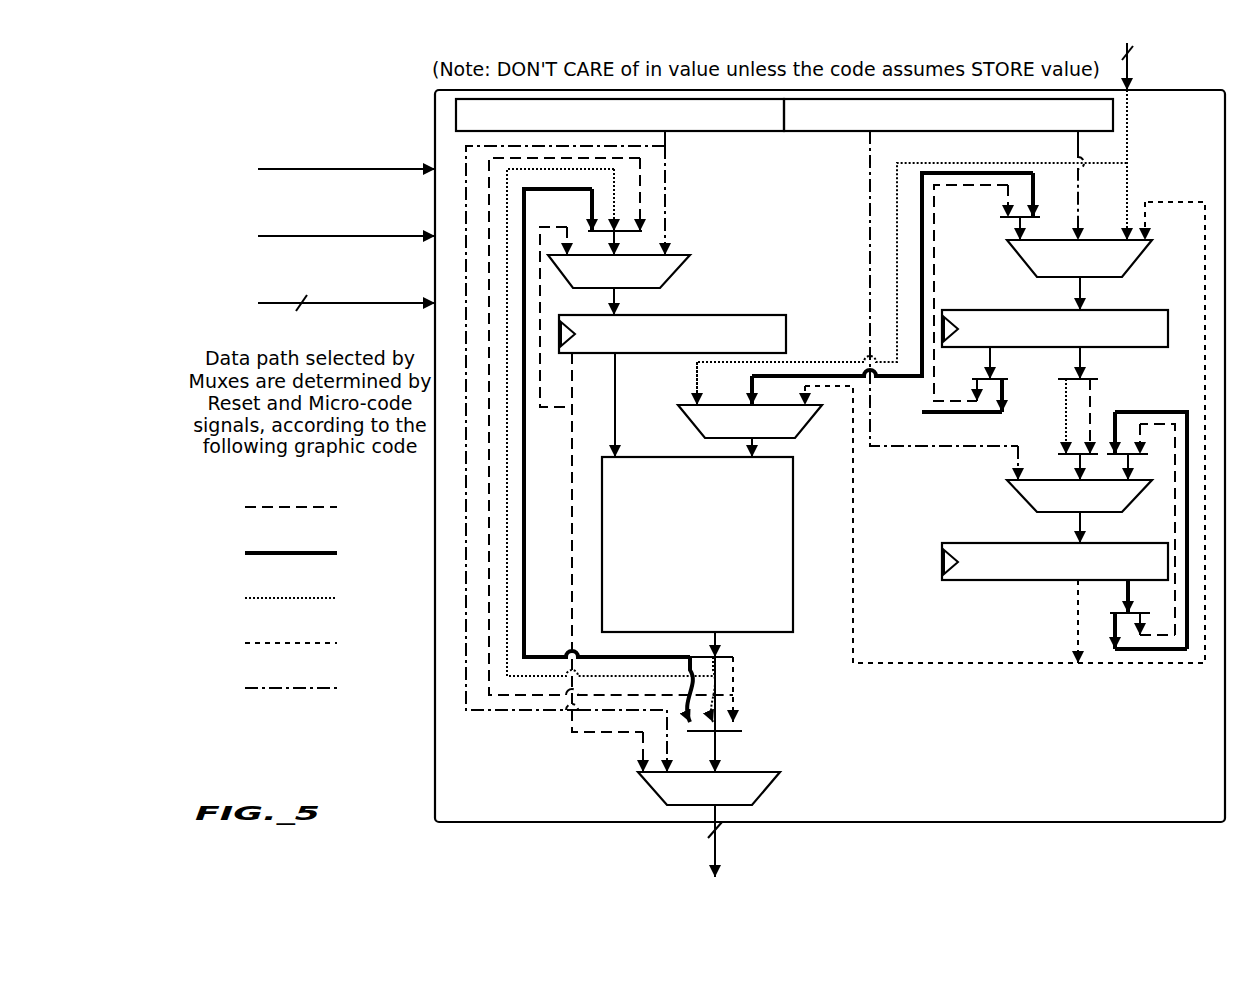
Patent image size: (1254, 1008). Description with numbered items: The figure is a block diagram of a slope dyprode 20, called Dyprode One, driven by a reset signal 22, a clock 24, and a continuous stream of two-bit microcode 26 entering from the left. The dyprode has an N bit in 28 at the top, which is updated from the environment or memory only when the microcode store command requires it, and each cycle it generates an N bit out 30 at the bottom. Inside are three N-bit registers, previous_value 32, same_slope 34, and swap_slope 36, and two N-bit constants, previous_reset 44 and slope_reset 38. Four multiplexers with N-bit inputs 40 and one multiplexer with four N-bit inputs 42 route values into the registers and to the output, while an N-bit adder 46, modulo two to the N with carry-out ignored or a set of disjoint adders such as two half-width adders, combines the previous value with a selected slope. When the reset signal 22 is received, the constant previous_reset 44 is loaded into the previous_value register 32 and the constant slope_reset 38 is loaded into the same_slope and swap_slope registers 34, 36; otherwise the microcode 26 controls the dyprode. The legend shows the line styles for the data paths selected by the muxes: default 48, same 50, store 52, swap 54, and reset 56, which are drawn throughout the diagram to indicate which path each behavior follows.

The slope dyprode 20 is at (1010, 822).
The reset signal 22 is at (262, 170).
The clock 24 is at (262, 237).
The microcode 26 is at (262, 304).
The N bit in 28 is at (1135, 62).
The N bit out 30 is at (704, 830).
The previous_value register 32 is at (765, 315).
The same_slope register 34 is at (1013, 310).
The swap_slope register 36 is at (1010, 580).
The slope_reset constant 38 is at (852, 132).
The multiplexers with N-bit inputs 40 is at (680, 262).
The multiplexer with four N-bit inputs 42 is at (1140, 260).
The previous_reset constant 44 is at (760, 132).
The N-bit adder 46 is at (793, 534).
The default data path 48 is at (245, 508).
The same data path 50 is at (245, 554).
The store data path 52 is at (245, 599).
The swap data path 54 is at (245, 644).
The reset data path 56 is at (245, 689).